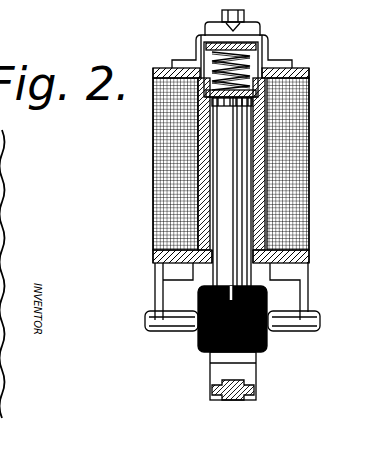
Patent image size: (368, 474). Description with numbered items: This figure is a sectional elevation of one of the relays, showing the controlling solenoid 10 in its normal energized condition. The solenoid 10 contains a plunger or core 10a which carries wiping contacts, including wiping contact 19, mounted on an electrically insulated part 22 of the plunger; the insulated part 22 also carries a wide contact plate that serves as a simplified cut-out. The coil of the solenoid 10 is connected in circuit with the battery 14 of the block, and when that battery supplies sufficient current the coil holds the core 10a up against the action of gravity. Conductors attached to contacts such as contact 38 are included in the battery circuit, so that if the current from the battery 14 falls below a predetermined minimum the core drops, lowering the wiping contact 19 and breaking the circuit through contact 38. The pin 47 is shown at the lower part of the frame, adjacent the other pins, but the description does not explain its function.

The controlling solenoid 10 is at (297, 217).
The plunger or core 10a is at (262, 141).
The battery 14 is at (42, 14).
The wiping contact 19 is at (200, 328).
The insulated part 22 is at (263, 352).
The contact 38 is at (196, 332).
The pivot pin 47 is at (278, 332).